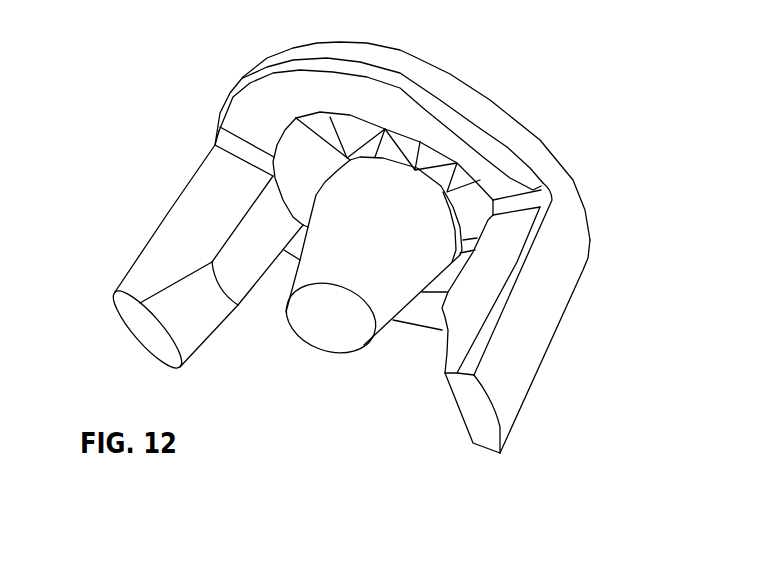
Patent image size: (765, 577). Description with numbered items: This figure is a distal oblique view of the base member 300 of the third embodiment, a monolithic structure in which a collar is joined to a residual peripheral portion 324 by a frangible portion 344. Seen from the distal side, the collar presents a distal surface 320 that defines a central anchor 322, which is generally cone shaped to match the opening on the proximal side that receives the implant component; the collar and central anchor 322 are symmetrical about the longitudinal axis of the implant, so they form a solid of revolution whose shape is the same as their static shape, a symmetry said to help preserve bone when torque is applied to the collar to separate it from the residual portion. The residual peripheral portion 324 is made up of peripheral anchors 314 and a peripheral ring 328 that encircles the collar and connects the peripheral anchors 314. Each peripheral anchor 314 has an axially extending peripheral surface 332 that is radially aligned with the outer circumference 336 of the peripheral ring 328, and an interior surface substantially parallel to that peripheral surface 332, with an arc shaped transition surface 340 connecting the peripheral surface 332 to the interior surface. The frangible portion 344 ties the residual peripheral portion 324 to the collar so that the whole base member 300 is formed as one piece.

The base member 300 is at (186, 63).
The peripheral anchors 314 is at (507, 410).
The distal surface 320 is at (430, 223).
The central anchor 322 is at (333, 337).
The residual peripheral portion 324 is at (590, 250).
The peripheral ring 328 is at (415, 57).
The peripheral surface 332 is at (535, 343).
The outer circumference 336 is at (573, 210).
The arc shaped transition surface 340 is at (200, 333).
The frangible portion 344 is at (303, 175).